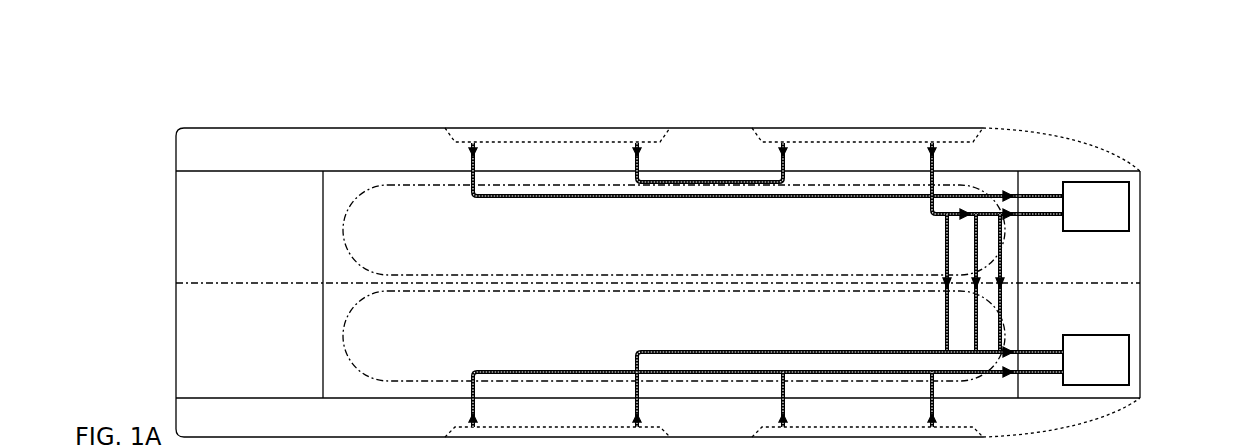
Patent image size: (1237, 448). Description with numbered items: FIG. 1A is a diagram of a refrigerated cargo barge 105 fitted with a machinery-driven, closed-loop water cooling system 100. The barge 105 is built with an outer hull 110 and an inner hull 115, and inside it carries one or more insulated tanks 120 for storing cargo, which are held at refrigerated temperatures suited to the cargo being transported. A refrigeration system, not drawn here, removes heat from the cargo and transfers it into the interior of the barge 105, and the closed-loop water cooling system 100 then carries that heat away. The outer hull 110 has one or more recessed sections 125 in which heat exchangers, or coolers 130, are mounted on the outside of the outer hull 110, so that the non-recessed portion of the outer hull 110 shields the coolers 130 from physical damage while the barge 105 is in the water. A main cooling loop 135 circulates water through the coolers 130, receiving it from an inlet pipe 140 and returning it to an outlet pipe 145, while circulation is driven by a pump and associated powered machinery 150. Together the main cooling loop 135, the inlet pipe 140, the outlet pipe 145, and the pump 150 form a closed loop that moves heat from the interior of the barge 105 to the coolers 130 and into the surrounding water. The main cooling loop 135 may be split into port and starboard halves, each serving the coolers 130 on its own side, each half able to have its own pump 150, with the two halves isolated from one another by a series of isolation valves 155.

The closed-loop water cooling system 100 is at (652, 98).
The refrigerated cargo barge 105 is at (176, 335).
The outer hull 110 is at (316, 128).
The inner hull 115 is at (414, 171).
The insulated tanks 120 is at (343, 232).
The recessed sections 125 is at (480, 142).
The heat exchangers (coolers) 130 is at (565, 128).
The main cooling loop 135 is at (906, 200).
The inlet pipe 140 is at (1050, 192).
The outlet pipe 145 is at (1035, 216).
The pump and associated powered machinery 150 is at (1110, 181).
The isolation valves 155 is at (1000, 289).